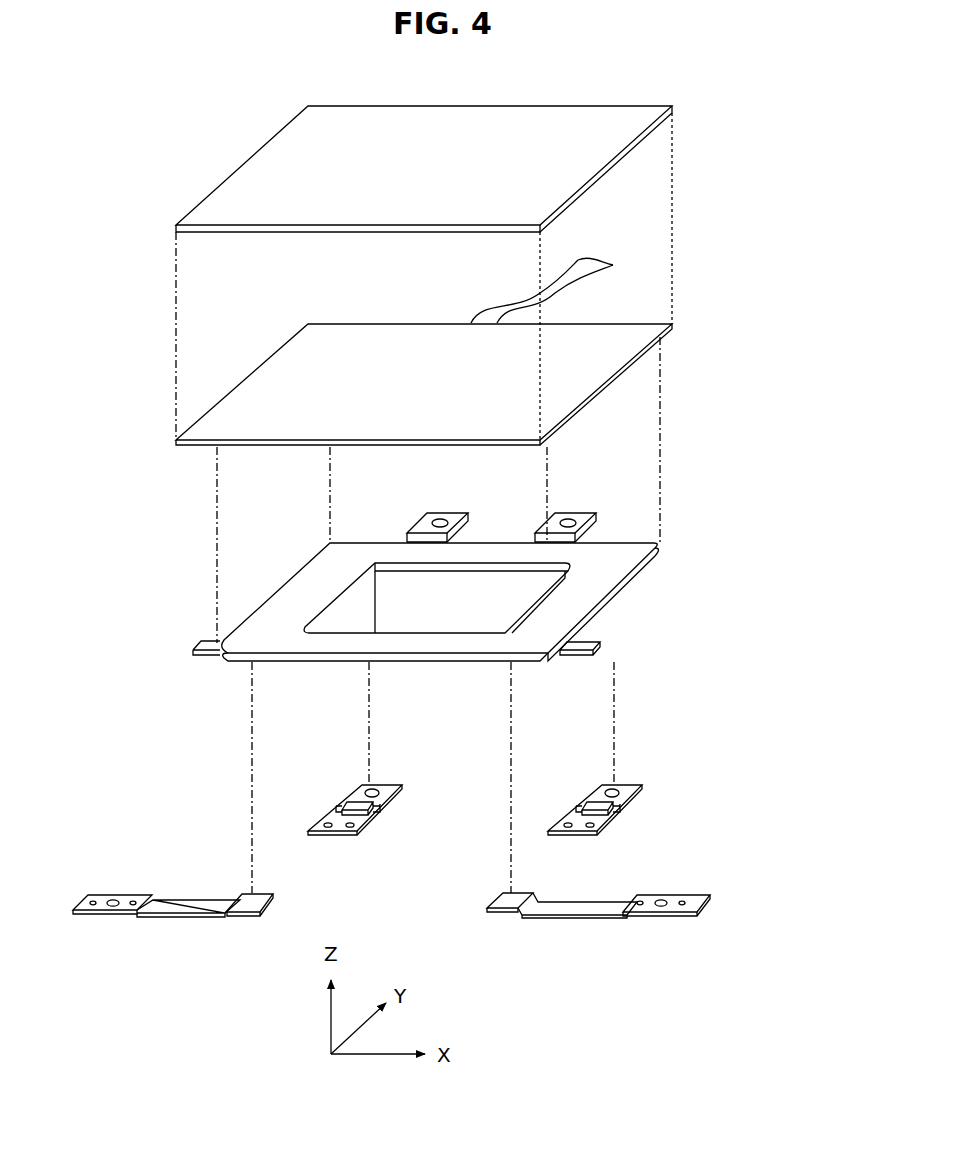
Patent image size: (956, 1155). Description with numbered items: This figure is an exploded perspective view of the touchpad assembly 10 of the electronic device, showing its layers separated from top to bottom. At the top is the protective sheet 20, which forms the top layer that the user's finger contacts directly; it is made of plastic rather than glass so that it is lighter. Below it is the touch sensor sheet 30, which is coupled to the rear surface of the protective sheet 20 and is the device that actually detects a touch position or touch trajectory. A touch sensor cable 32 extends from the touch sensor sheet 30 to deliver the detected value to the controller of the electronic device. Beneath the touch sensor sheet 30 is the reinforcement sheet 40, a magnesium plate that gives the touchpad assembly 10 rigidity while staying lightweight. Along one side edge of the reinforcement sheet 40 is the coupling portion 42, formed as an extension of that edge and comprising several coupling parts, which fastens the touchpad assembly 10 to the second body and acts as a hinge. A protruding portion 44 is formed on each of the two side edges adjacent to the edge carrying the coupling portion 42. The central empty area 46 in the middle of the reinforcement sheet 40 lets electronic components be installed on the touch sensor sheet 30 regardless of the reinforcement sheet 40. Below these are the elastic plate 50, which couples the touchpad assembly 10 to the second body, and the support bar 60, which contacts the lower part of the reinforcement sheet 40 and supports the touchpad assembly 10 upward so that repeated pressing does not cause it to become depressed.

The touchpad assembly 10 is at (212, 109).
The protective sheet 20 is at (686, 112).
The touch sensor sheet 30 is at (678, 338).
The touch sensor cable 32 is at (505, 307).
The reinforcement sheet 40 is at (652, 591).
The coupling portion 42 is at (425, 528).
The protruding portion 44 is at (195, 643).
The central empty area 46 is at (355, 598).
The elastic plate 50 is at (628, 816).
The support bar 60 is at (718, 901).